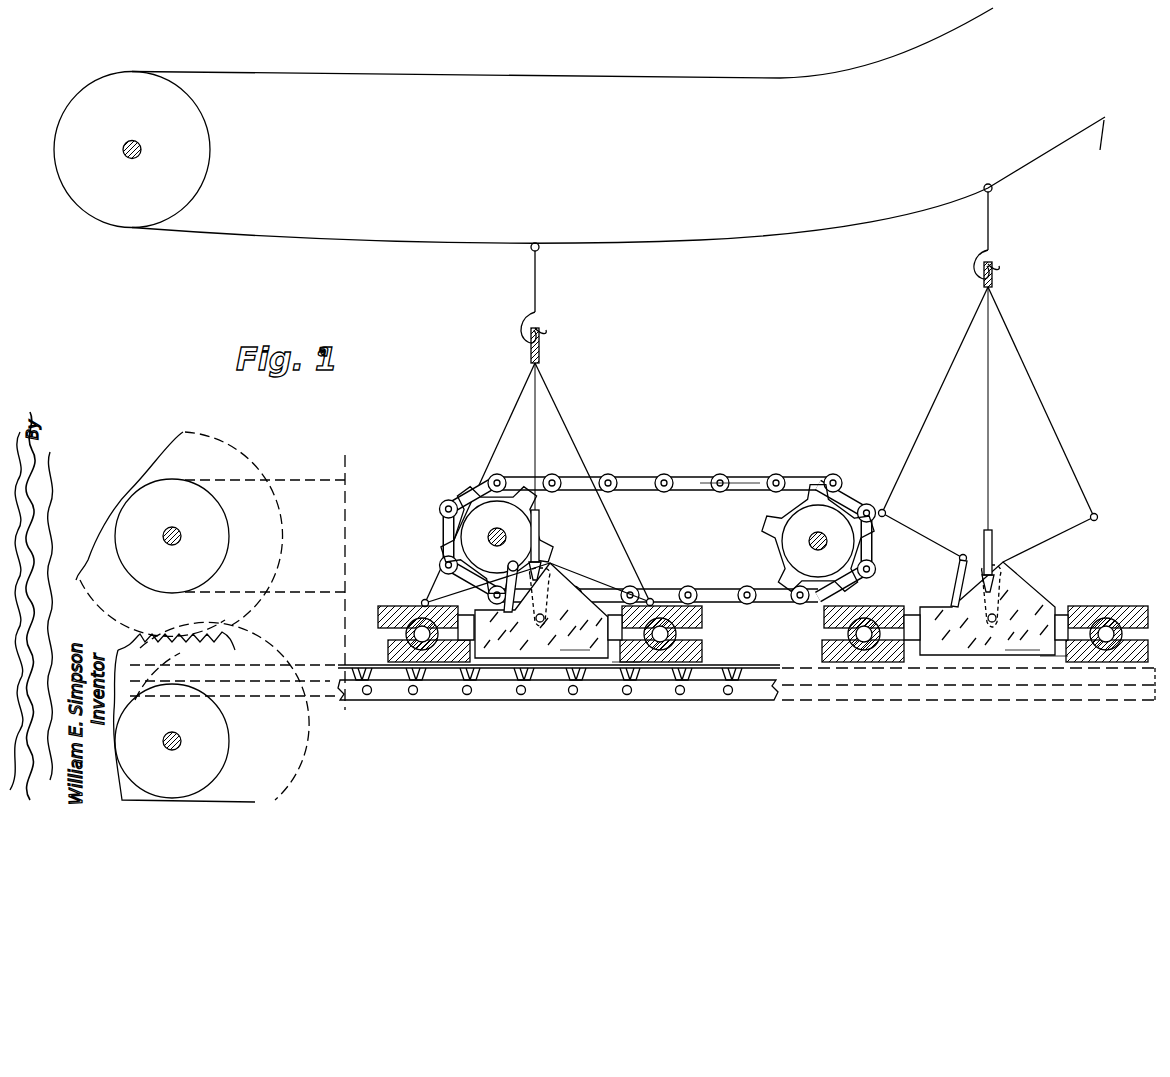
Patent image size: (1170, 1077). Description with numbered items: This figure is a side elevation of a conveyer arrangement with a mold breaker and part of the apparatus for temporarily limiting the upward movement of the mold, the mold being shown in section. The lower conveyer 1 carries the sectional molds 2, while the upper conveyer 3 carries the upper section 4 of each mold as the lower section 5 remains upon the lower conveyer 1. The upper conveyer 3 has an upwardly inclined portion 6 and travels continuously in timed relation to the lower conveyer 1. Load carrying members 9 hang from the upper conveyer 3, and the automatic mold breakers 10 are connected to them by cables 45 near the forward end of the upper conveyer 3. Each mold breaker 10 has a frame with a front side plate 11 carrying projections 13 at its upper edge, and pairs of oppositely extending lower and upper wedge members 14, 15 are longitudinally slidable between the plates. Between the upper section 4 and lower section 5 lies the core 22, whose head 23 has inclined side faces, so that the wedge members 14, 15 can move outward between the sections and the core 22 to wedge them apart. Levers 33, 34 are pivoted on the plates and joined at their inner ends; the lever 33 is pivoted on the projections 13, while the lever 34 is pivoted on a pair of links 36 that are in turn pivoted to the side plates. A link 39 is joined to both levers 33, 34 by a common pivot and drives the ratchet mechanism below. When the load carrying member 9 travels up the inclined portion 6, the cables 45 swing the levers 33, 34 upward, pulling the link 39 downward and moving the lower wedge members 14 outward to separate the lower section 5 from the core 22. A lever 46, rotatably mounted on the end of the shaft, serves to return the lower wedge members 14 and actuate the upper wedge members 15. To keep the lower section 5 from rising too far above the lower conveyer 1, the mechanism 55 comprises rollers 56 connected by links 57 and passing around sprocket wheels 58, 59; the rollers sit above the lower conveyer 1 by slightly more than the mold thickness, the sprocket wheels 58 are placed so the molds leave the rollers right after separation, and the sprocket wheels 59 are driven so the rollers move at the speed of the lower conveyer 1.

The lower conveyer 1 is at (396, 672).
The sectional mold 2 is at (698, 637).
The upper conveyer 3 is at (322, 70).
The upper section 4 is at (396, 606).
The lower section 5 is at (390, 646).
The upwardly inclined portion 6 is at (1095, 140).
The load carrying member 9 is at (528, 320).
The automatic mold breaker 10 is at (545, 658).
The front side plate 11 is at (572, 650).
The projection 13 is at (560, 580).
The lower wedge member 14 is at (1058, 656).
The upper wedge member 15 is at (1068, 606).
The core 22 is at (700, 623).
The head 23 is at (622, 662).
The lever 33 is at (600, 592).
The lever 34 is at (426, 600).
The link 36 is at (954, 584).
The link 39 is at (552, 562).
The cable 45 is at (500, 434).
The lever 46 is at (542, 528).
The mechanism for temporarily limiting upward movement 55 is at (456, 492).
The roller 56 is at (720, 477).
The link 57 is at (633, 478).
The sprocket wheel 58 is at (774, 537).
The sprocket wheel 59 is at (556, 554).